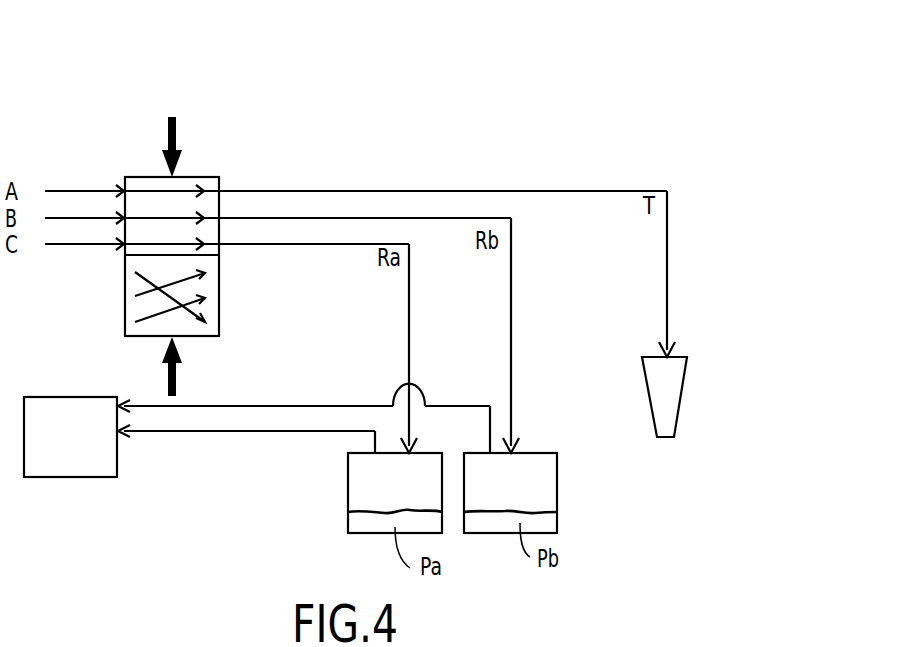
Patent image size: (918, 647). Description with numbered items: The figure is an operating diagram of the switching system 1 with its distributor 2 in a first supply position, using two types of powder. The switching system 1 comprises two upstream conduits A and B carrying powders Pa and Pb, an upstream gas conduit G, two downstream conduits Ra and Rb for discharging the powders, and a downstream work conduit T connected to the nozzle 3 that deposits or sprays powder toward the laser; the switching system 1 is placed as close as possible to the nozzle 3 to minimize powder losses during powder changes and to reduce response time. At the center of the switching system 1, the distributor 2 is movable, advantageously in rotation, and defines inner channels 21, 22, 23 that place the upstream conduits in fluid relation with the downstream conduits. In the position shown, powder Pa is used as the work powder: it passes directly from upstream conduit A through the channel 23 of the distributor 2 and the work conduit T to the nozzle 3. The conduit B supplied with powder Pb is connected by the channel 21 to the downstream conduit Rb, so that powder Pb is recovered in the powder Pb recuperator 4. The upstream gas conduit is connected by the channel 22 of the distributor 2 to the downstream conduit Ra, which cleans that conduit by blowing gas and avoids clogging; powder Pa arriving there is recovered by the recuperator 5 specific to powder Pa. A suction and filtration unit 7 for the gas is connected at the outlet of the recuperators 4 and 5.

The switching system 1 is at (200, 95).
The distributor 2 is at (242, 154).
The channel 21 is at (157, 218).
The channel 22 is at (150, 245).
The channel 23 is at (157, 190).
The nozzle 3 is at (673, 392).
The powder Pb recuperator 4 is at (558, 490).
The recuperator 5 is at (348, 497).
The suction and filtration unit 7 is at (55, 478).